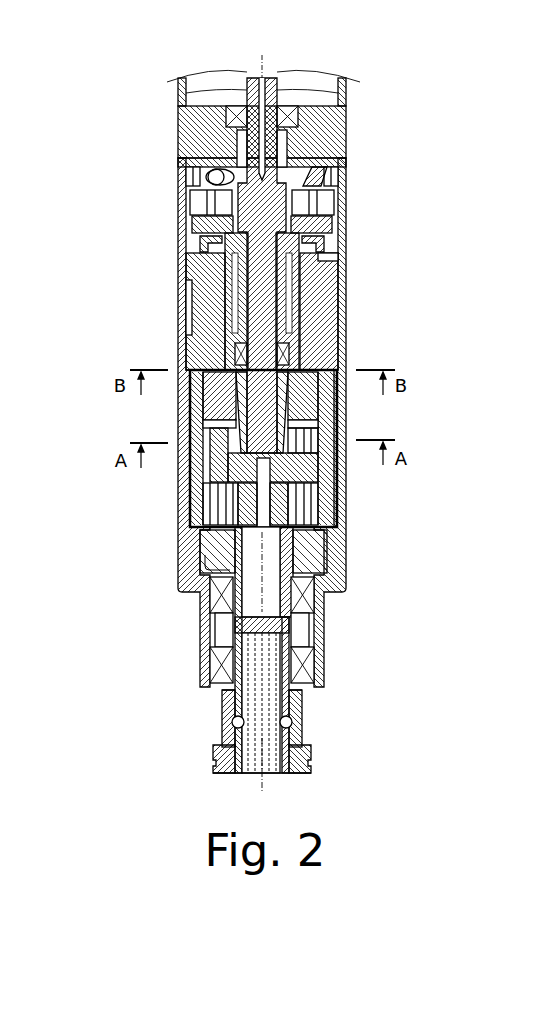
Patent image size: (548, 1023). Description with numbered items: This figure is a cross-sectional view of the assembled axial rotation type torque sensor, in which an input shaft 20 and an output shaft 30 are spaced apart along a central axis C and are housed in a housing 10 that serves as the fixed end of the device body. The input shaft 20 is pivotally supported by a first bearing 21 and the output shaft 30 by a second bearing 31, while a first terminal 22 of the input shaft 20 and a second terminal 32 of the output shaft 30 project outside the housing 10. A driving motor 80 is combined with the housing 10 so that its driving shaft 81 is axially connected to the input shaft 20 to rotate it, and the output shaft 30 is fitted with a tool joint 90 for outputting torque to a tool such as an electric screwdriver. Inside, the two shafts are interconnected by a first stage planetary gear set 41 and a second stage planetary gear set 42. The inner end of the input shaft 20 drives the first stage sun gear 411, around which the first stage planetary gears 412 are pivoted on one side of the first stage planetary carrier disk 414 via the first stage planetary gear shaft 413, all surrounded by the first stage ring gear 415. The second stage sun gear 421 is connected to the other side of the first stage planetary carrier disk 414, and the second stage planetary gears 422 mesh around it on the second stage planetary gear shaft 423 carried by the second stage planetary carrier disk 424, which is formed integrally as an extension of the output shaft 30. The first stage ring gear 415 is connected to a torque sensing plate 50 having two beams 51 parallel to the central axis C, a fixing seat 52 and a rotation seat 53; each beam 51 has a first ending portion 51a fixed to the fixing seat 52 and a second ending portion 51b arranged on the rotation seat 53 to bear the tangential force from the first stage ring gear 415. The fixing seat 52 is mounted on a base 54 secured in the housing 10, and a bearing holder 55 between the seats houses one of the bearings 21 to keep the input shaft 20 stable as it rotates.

The housing 10 is at (188, 207).
The input shaft 20 is at (340, 200).
The first bearing 21 is at (346, 236).
The first terminal 22 is at (280, 100).
The output shaft 30 is at (222, 701).
The second bearing 31 is at (200, 598).
The second terminal 32 is at (235, 770).
The first stage planetary gear set 41 is at (174, 466).
The first stage sun gear 411 is at (182, 400).
The first stage planetary gears 412 is at (185, 430).
The first stage planetary gear shaft 413 is at (185, 468).
The first stage planetary carrier disk 414 is at (185, 485).
The first stage ring gear 415 is at (189, 521).
The second stage planetary gear set 42 is at (334, 631).
The second stage sun gear 421 is at (348, 490).
The second stage planetary gears 422 is at (348, 502).
The second stage planetary gear shaft 423 is at (340, 546).
The second stage planetary carrier disk 424 is at (329, 666).
The torque sensing plate 50 is at (279, 317).
The beams 51 is at (338, 300).
The first ending portion 51a is at (190, 268).
The second ending portion 51b is at (190, 352).
The fixing seat 52 is at (338, 262).
The rotation seat 53 is at (346, 382).
The base 54 is at (200, 240).
The bearing holder 55 is at (192, 310).
The driving motor 80 is at (346, 86).
The driving shaft 81 is at (178, 90).
The tool joint 90 is at (305, 719).
The central axis C is at (266, 777).